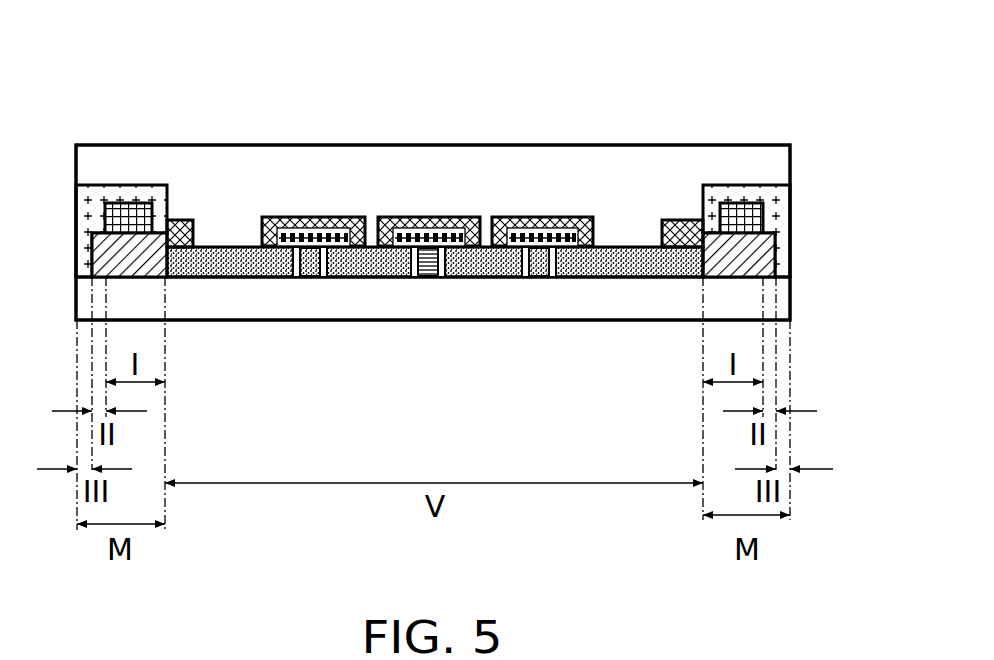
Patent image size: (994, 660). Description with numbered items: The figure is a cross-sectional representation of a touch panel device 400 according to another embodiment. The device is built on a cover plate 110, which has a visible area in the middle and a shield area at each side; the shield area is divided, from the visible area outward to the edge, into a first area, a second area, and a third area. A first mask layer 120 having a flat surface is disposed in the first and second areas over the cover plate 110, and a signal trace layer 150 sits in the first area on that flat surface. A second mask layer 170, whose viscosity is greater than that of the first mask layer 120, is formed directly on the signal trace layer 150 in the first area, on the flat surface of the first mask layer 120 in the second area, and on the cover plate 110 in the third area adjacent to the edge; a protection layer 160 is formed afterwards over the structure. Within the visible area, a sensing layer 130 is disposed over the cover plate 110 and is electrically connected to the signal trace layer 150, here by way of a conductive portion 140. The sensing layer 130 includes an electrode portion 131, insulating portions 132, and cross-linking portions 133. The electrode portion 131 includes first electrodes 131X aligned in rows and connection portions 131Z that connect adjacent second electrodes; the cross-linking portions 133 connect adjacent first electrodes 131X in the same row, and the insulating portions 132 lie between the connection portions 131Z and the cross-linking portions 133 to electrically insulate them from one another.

The touch panel device 400 is at (752, 60).
The cover plate 110 is at (652, 297).
The first mask layer 120 is at (75, 258).
The sensing layer 130 is at (388, 345).
The electrode portion 131 is at (337, 372).
The first electrodes 131X is at (207, 255).
The connection portions 131Z is at (322, 278).
The insulating portions 132 is at (422, 278).
The cross-linking portions 133 is at (531, 293).
The conductive portion 140 is at (623, 278).
The signal trace layer 150 is at (122, 190).
The protection layer 160 is at (648, 162).
The second mask layer 170 is at (75, 203).